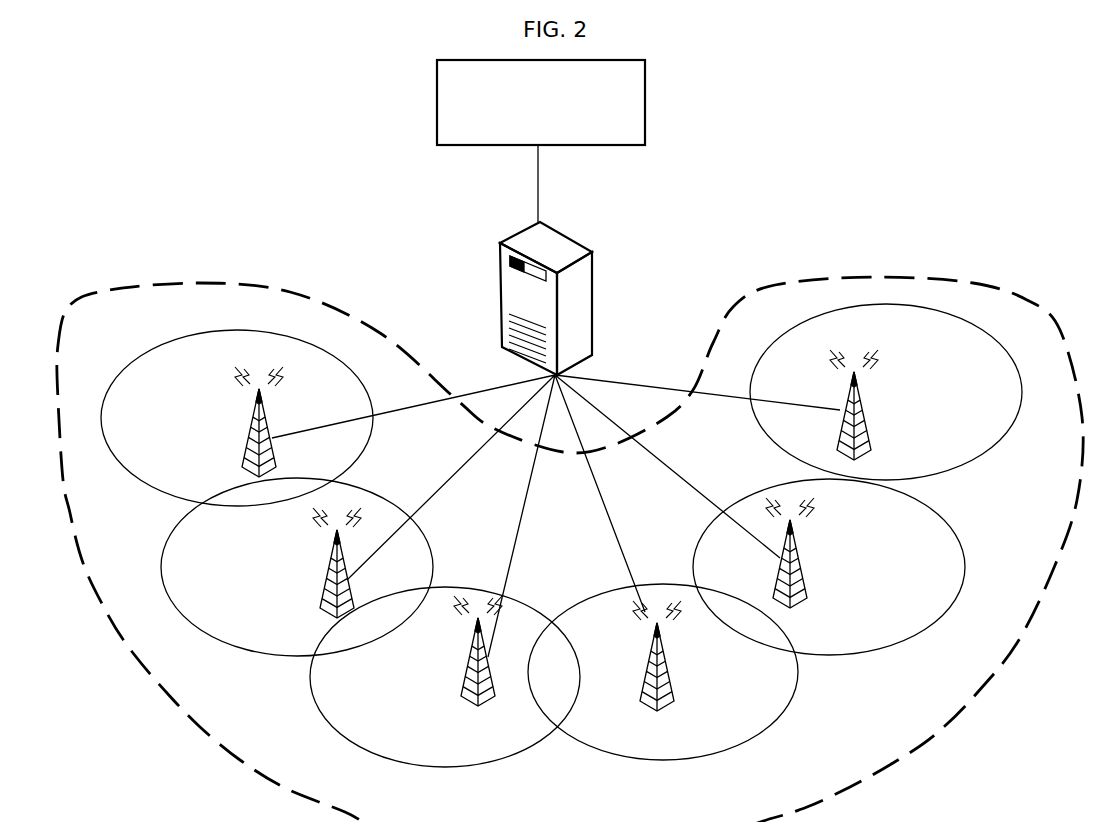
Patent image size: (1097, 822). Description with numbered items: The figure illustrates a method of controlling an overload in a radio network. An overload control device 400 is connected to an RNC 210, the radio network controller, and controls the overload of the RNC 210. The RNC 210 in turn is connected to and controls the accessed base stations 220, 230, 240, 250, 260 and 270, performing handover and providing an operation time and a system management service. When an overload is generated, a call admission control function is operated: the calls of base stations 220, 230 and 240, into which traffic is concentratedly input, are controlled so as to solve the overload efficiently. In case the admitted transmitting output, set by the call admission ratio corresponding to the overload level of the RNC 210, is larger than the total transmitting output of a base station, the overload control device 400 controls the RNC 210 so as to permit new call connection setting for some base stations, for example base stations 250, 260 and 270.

The overload control device 400 is at (648, 101).
The RNC 210 is at (580, 240).
The base station 220 is at (263, 412).
The base station 230 is at (345, 555).
The base station 240 is at (490, 645).
The base station 250 is at (655, 618).
The base station 260 is at (780, 548).
The base station 270 is at (843, 396).